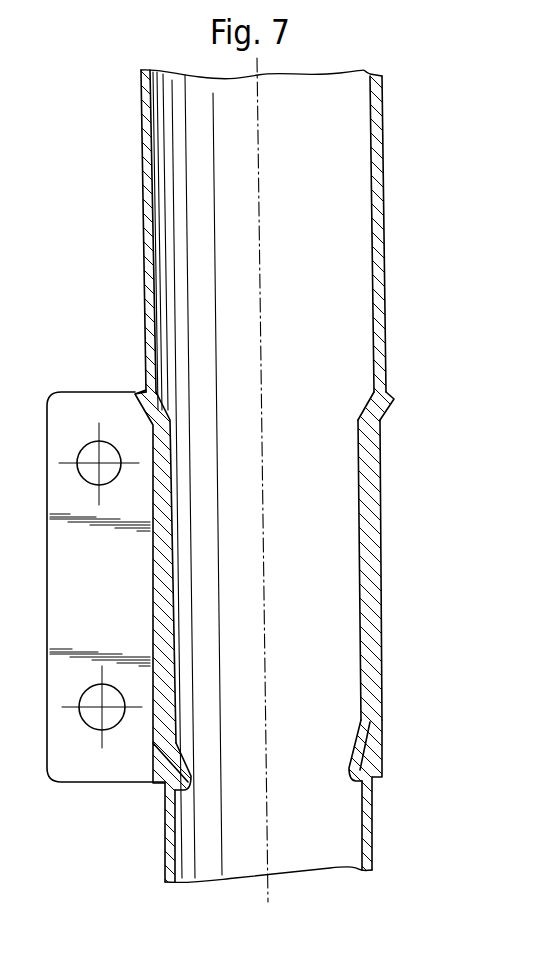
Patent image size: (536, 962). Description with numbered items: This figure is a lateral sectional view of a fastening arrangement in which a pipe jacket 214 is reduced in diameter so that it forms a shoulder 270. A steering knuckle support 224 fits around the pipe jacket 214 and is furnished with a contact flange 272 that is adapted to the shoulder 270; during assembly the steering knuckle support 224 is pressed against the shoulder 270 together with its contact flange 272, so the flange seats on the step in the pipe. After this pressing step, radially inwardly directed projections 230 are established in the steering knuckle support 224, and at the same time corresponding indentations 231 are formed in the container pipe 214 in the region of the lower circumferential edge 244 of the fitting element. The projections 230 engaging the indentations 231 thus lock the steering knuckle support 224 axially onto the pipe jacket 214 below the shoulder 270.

The pipe jacket 214 is at (142, 146).
The steering knuckle support 224 is at (372, 573).
The radially inwardly directed projections 230 is at (370, 752).
The indentations 231 is at (350, 770).
The lower circumferential edge 244 is at (382, 780).
The shoulder 270 is at (370, 398).
The contact flange 272 is at (389, 411).